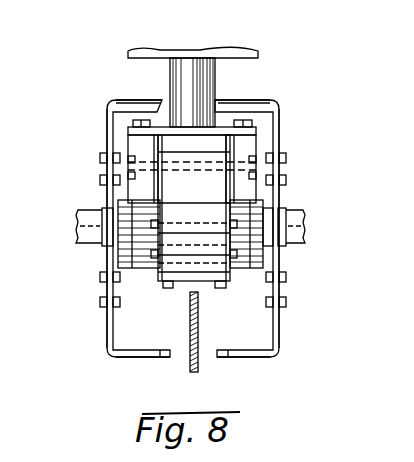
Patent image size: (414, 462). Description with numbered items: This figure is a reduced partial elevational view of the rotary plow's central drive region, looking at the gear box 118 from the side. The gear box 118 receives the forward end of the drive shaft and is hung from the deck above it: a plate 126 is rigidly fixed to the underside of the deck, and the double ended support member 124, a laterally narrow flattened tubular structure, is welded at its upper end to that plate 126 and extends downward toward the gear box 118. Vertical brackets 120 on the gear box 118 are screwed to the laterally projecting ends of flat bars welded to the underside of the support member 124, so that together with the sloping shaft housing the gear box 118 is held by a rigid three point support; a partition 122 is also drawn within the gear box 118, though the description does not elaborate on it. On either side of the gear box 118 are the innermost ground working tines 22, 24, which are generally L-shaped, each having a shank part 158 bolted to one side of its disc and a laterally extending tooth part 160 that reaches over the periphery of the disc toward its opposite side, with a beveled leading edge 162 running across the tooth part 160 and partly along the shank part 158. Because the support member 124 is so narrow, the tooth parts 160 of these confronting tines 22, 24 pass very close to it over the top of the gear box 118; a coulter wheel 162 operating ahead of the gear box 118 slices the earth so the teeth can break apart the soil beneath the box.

The tine 22 is at (280, 330).
The tine 24 is at (108, 346).
The gear box 118 is at (217, 222).
The vertical brackets 120 is at (132, 143).
The housing partition 122 is at (156, 146).
The support member 124 is at (217, 80).
The plate 126 is at (258, 55).
The shank part 158 is at (281, 108).
The tooth part 160 is at (161, 96).
The beveled leading edge 162 is at (199, 317).